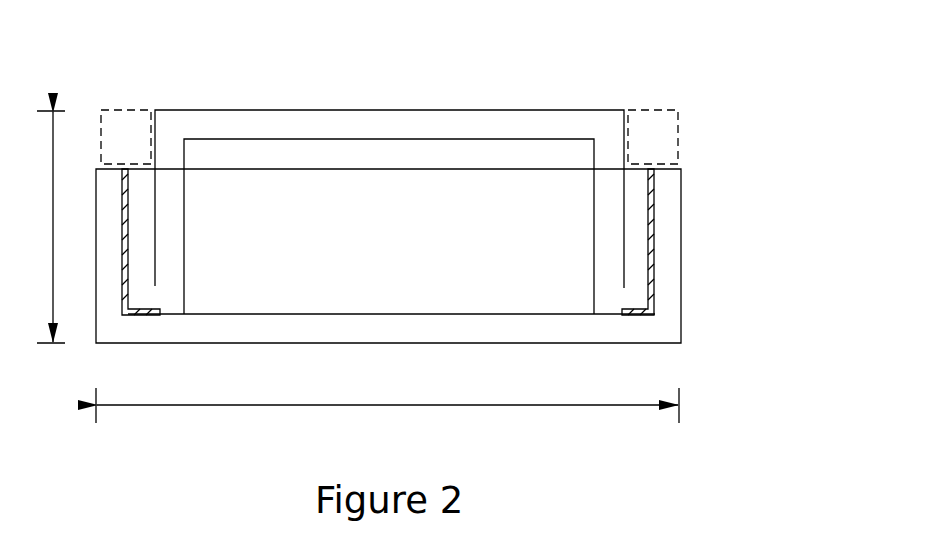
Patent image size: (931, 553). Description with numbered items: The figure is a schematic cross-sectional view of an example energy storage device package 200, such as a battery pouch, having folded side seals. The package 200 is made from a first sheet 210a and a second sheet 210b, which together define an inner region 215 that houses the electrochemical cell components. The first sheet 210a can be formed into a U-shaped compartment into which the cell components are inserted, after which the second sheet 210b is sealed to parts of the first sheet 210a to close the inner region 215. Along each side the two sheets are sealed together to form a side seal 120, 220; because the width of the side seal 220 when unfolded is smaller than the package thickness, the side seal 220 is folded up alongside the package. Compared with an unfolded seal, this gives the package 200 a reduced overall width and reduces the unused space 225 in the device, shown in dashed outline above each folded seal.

The package 200 is at (585, 58).
The first sheet 210a is at (273, 128).
The second sheet 210b is at (440, 332).
The inner region 215 is at (396, 237).
The side seal 220 is at (654, 274).
The unused space 225 is at (142, 145).
The side seal 120 is at (125, 303).